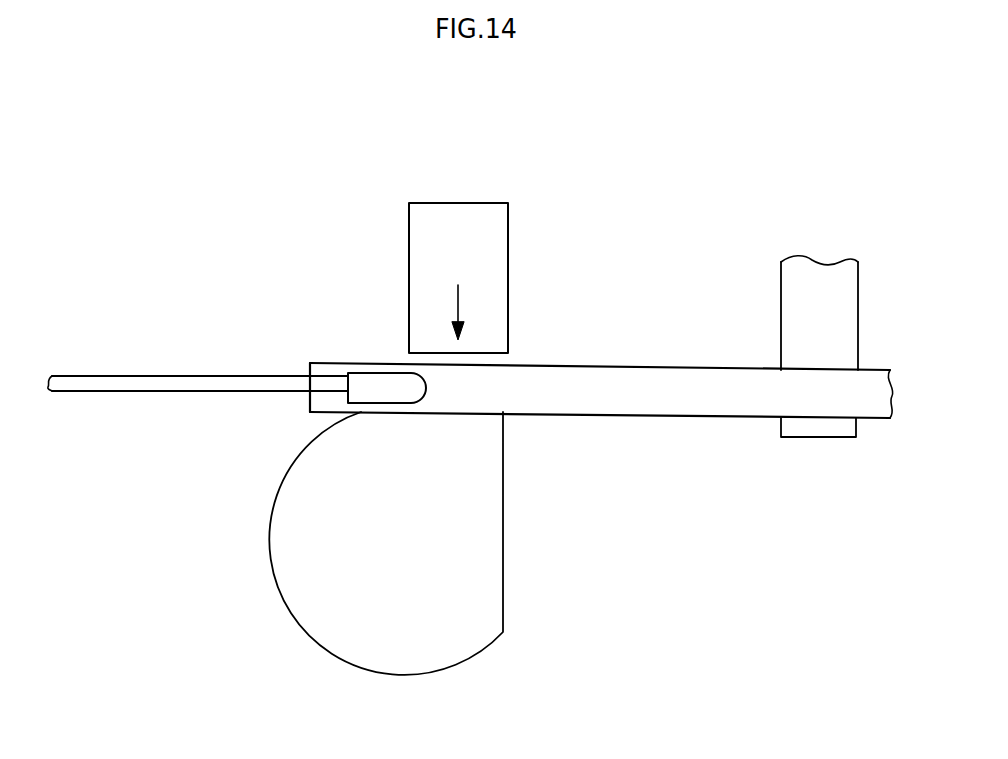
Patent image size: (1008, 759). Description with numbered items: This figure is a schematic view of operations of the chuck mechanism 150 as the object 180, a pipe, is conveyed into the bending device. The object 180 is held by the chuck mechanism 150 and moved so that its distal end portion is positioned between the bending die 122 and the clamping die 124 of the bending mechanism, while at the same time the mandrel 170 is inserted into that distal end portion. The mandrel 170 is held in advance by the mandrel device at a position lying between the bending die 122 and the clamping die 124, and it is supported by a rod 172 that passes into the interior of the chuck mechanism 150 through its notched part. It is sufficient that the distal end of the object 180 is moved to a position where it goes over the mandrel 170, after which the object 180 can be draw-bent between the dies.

The bending die 122 is at (470, 553).
The clamping die 124 is at (456, 212).
The chuck mechanism 150 is at (828, 280).
The mandrel 170 is at (375, 372).
The rod 172 is at (158, 378).
The object 180 is at (642, 380).